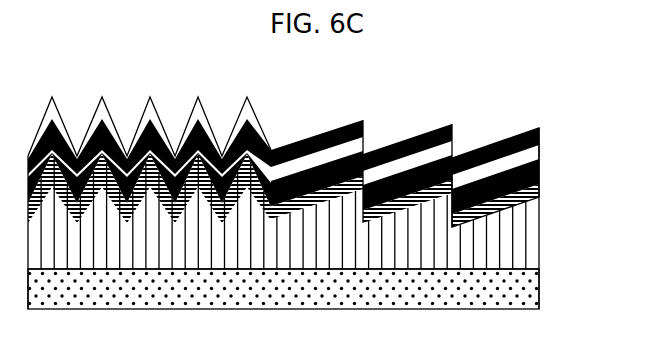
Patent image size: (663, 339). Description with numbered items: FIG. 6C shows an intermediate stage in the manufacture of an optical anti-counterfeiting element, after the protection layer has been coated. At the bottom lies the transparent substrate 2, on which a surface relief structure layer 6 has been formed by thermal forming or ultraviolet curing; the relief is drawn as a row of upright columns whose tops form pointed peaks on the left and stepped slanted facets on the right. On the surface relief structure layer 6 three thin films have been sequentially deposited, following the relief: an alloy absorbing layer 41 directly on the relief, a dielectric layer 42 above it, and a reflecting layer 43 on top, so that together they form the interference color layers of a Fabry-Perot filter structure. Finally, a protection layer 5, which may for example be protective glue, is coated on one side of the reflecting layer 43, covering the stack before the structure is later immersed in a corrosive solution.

The transparent substrate 2 is at (541, 295).
The protection layer 5 is at (495, 137).
The surface relief structure layer 6 is at (541, 247).
The alloy absorbing layer 41 is at (541, 190).
The dielectric layer 42 is at (541, 168).
The reflecting layer 43 is at (541, 143).